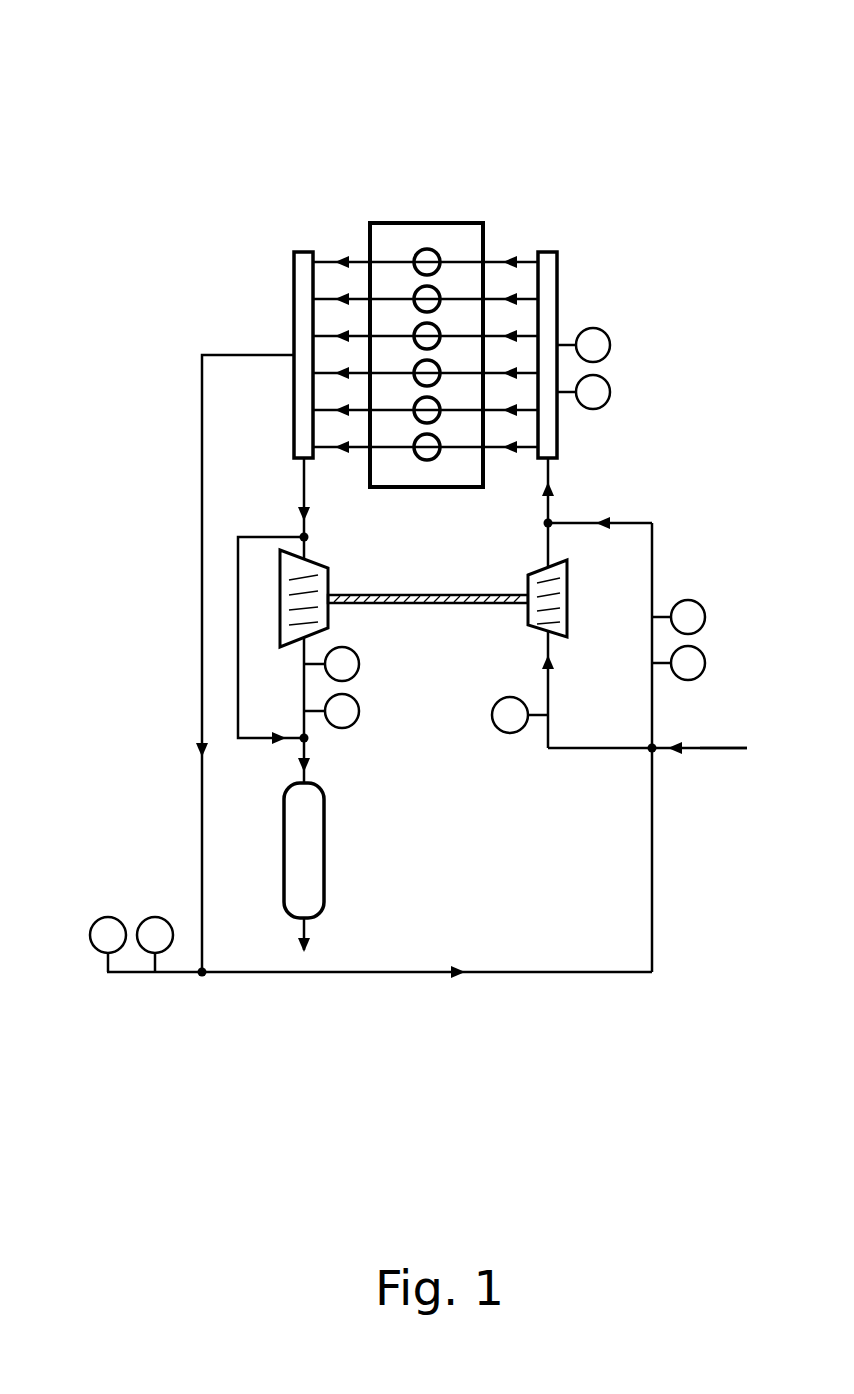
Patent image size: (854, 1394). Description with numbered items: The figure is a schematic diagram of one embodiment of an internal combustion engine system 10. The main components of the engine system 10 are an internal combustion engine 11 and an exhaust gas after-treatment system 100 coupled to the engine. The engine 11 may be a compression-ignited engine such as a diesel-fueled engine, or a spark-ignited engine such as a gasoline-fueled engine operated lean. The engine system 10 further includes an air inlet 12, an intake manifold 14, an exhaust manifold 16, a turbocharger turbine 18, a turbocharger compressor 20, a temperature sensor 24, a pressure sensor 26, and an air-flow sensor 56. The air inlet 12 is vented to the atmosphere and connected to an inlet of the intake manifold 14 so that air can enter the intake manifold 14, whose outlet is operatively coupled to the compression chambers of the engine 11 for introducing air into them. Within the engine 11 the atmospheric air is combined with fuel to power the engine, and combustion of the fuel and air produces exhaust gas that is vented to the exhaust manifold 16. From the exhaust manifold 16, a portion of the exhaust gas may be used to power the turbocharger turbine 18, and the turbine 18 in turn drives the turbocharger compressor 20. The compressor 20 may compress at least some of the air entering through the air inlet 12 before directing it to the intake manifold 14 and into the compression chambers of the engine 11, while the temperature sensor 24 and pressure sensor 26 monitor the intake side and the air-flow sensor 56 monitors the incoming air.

The internal combustion engine system 10 is at (84, 80).
The internal combustion engine 11 is at (432, 223).
The air inlet 12 is at (728, 752).
The intake manifold 14 is at (559, 268).
The exhaust manifold 16 is at (294, 276).
The turbocharger turbine 18 is at (330, 567).
The turbocharger compressor 20 is at (526, 576).
The temperature sensor 24 is at (612, 345).
The pressure sensor 26 is at (612, 392).
The air-flow sensor 56 is at (512, 733).
The exhaust gas after-treatment system 100 is at (326, 847).